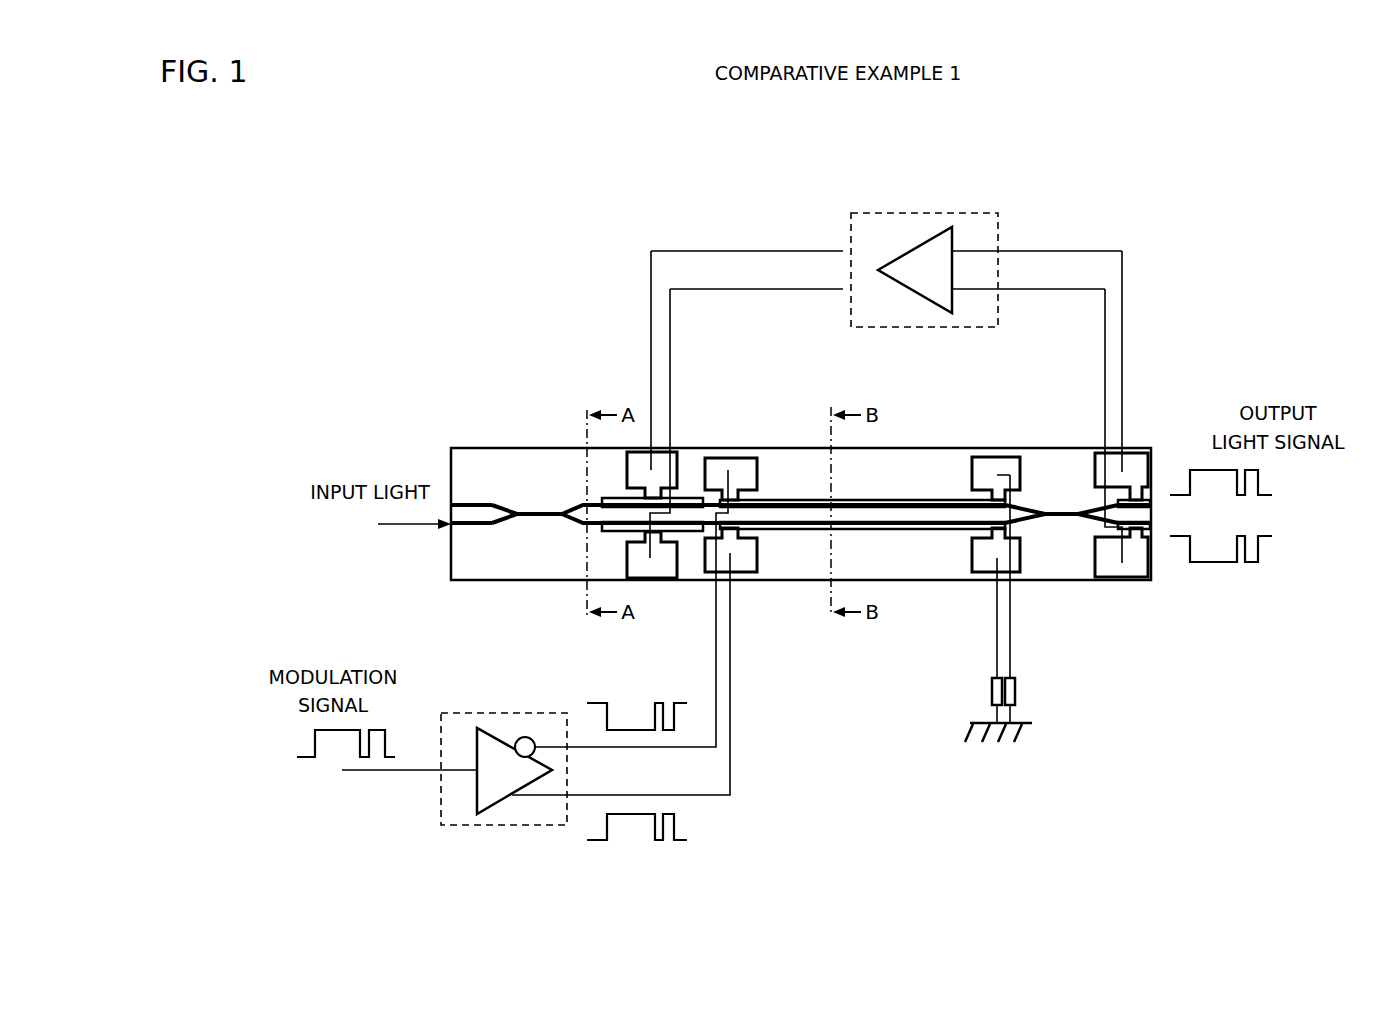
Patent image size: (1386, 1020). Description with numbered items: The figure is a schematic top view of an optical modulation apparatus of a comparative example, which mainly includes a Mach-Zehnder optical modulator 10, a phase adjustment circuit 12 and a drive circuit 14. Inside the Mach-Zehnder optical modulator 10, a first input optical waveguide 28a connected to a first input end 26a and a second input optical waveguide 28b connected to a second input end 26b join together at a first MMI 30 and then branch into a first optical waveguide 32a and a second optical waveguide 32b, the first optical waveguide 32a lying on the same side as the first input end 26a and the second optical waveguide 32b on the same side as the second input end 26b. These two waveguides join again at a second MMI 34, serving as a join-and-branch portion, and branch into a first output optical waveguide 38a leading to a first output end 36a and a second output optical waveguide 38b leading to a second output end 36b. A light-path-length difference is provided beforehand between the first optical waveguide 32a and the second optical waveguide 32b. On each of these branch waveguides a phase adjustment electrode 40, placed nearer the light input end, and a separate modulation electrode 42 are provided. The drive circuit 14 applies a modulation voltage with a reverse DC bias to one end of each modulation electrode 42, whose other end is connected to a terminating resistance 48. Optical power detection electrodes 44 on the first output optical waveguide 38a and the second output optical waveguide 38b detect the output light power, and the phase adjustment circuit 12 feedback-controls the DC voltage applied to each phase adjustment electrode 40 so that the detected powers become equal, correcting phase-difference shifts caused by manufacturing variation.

The Mach-Zehnder optical modulator 10 is at (902, 592).
The phase adjustment circuit 12 is at (925, 212).
The drive circuit 14 is at (503, 826).
The first input end 26a is at (450, 528).
The second input end 26b is at (451, 498).
The first input optical waveguide 28a is at (470, 530).
The second input optical waveguide 28b is at (480, 500).
The first MMI 30 is at (530, 517).
The first optical waveguide 32a is at (572, 526).
The second optical waveguide 32b is at (575, 503).
The second MMI 34 is at (1048, 510).
The first output end 36a is at (1153, 505).
The second output end 36b is at (1153, 525).
The first output optical waveguide 38a is at (1097, 503).
The second output optical waveguide 38b is at (1090, 526).
The phase adjustment electrode 40 is at (687, 451).
The modulation electrode 42 is at (790, 500).
The optical power detection electrode 44 is at (1117, 500).
The terminating resistance 48 is at (992, 690).